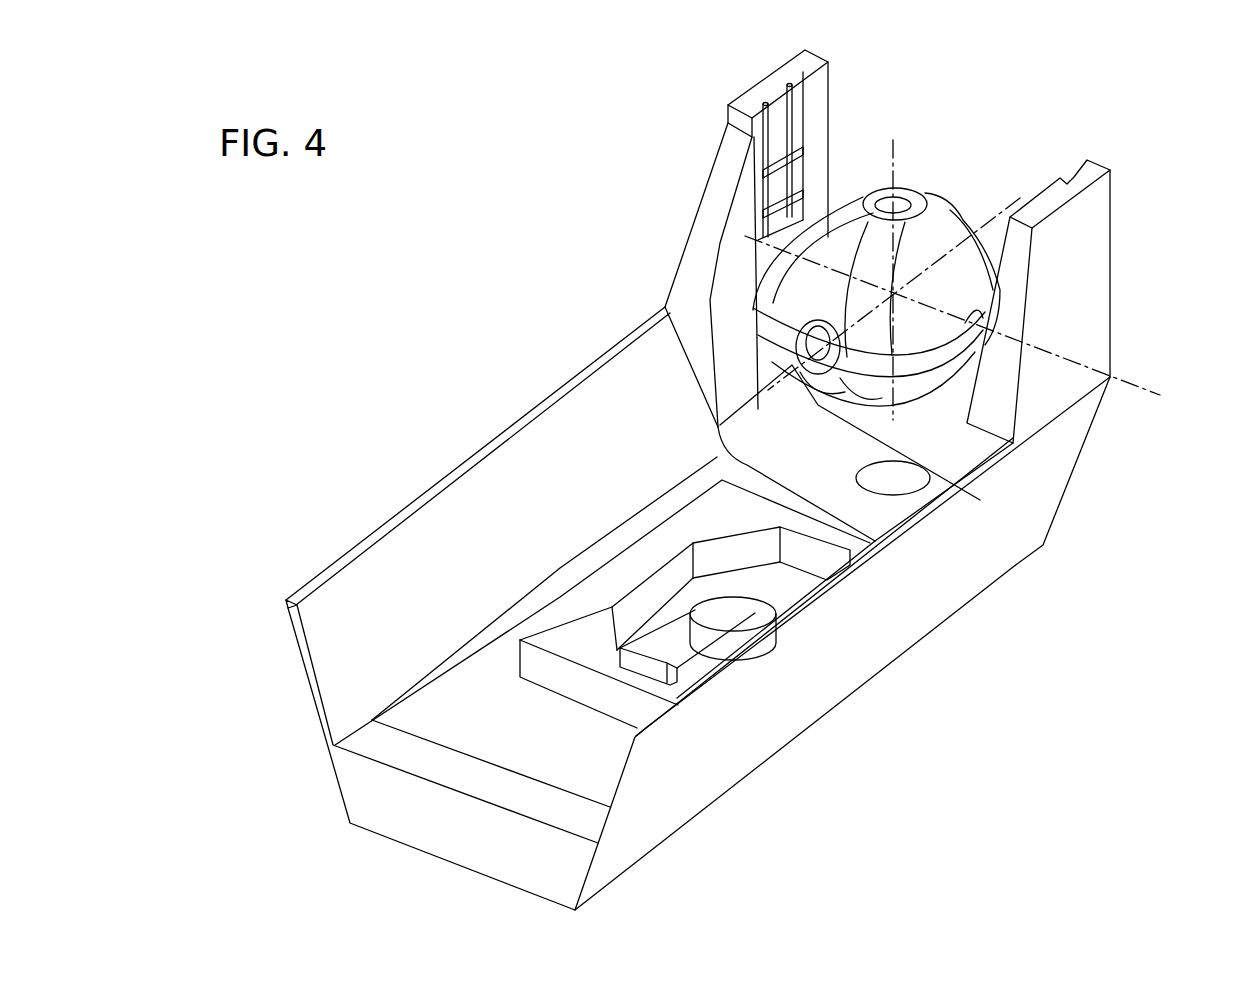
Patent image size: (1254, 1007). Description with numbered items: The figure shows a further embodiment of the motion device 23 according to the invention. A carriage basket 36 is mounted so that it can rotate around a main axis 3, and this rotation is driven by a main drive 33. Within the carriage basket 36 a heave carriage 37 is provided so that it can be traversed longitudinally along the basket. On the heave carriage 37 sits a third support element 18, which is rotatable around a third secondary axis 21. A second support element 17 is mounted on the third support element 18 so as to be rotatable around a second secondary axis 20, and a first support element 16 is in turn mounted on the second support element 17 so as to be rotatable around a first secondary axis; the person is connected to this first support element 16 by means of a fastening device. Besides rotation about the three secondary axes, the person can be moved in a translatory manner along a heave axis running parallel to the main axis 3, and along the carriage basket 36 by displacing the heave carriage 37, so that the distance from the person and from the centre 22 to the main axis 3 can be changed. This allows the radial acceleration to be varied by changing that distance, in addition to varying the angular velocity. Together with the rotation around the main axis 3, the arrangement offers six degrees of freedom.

The main axis 3 is at (732, 505).
The first support element 16 is at (818, 225).
The second support element 17 is at (917, 193).
The third support element 18 is at (952, 248).
The second secondary axis 20 is at (860, 305).
The third secondary axis 21 is at (1087, 370).
The centre 22 is at (893, 292).
The motion device 23 is at (892, 143).
The main drive 33 is at (763, 618).
The carriage basket 36 is at (1025, 488).
The heave carriage 37 is at (1067, 248).